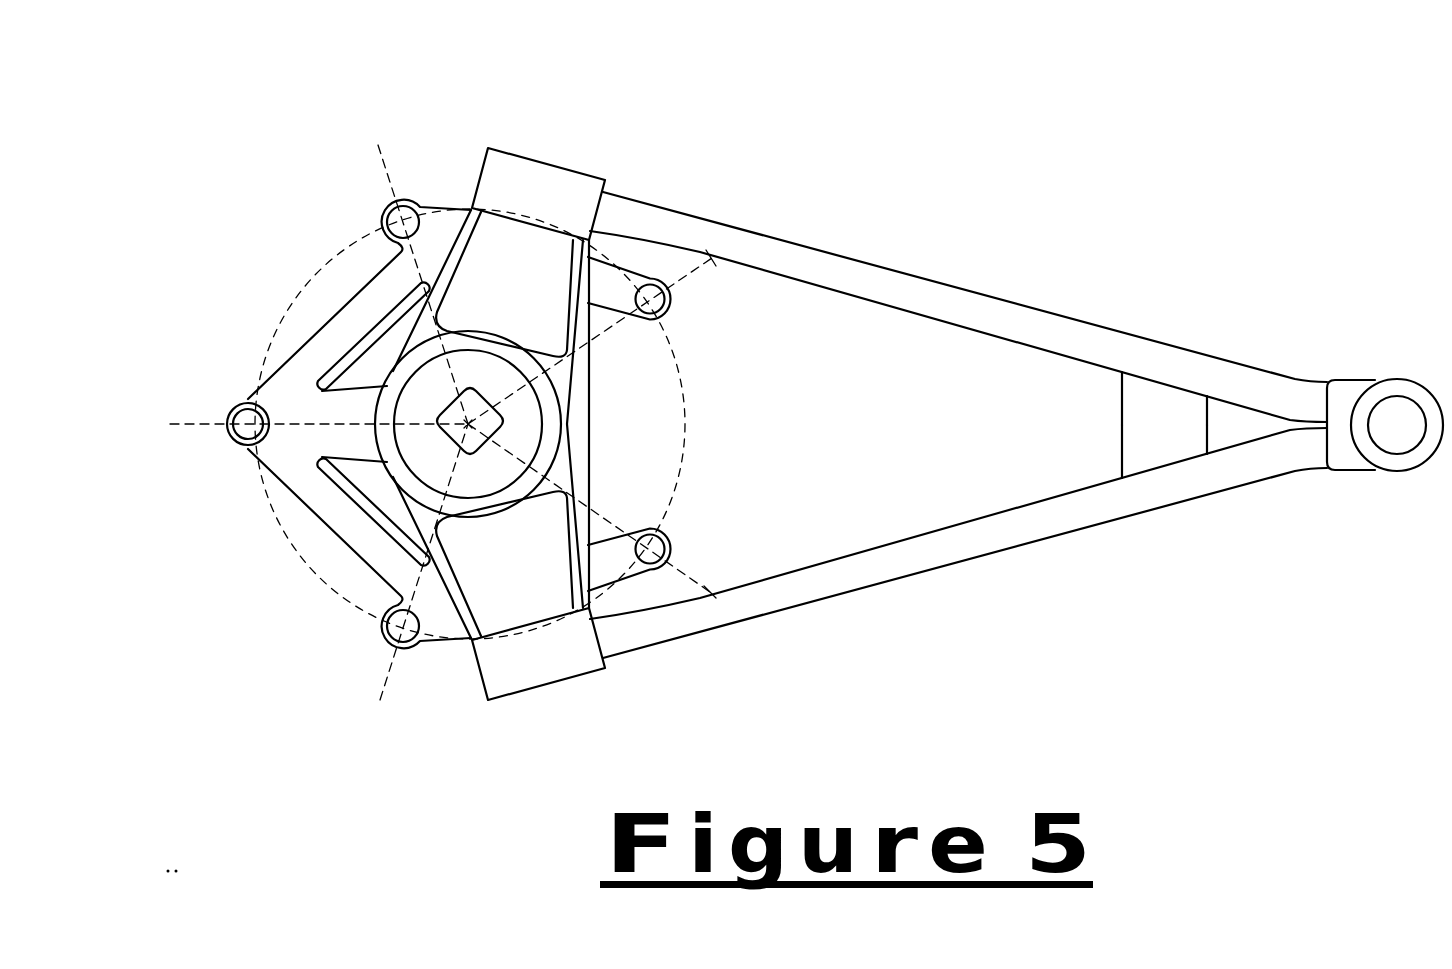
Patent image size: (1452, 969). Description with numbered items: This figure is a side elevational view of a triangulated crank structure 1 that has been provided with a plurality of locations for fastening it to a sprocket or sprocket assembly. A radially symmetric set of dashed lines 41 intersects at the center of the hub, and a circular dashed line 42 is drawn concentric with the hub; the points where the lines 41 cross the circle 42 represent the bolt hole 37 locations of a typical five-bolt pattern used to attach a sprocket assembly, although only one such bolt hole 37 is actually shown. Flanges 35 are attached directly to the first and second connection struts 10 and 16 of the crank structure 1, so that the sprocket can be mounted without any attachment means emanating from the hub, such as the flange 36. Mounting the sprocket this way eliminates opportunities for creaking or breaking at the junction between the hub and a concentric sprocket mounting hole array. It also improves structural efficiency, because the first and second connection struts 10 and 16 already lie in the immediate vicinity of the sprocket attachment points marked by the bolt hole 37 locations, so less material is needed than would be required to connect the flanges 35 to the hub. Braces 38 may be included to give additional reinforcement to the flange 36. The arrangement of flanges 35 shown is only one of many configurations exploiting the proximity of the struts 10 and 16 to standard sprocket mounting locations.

The crank structure 1 is at (888, 128).
The first connection strut 10 is at (585, 333).
The second connection strut 16 is at (588, 470).
The flanges 35 is at (390, 204).
The flange 36 is at (316, 381).
The bolt hole 37 is at (651, 314).
The braces 38 is at (337, 331).
The dashed lines 41 is at (388, 165).
The circular dashed line 42 is at (302, 285).